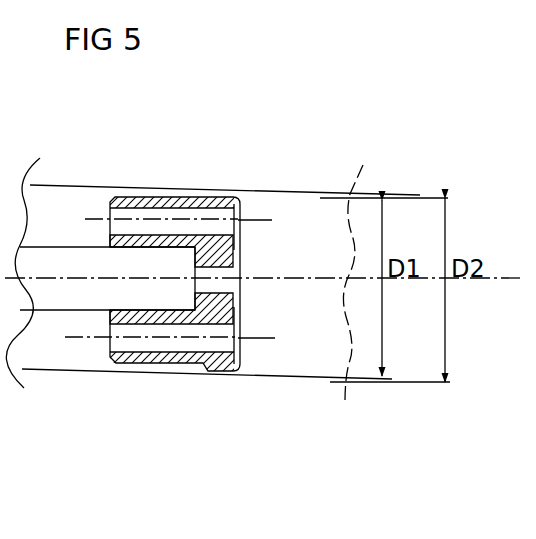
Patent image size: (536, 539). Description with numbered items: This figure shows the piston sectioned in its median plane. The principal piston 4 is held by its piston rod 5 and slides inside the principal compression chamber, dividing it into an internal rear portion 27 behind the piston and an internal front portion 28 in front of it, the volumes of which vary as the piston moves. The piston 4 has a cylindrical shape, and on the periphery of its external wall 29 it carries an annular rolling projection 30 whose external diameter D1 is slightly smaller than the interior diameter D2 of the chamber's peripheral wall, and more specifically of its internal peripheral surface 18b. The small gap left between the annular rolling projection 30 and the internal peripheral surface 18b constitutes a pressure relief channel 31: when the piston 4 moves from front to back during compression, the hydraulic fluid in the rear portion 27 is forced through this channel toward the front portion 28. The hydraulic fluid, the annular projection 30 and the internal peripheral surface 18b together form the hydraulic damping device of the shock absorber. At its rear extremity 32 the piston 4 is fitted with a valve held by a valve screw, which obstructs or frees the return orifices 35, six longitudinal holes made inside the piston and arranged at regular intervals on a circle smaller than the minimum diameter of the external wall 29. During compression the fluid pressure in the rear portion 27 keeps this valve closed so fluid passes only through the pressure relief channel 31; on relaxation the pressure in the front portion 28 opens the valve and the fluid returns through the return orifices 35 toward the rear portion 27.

The internal front portion 28 is at (56, 215).
The internal rear portion 27 is at (297, 247).
The internal peripheral surface 18b is at (300, 196).
The piston rod 5 is at (73, 297).
The annular rolling projection 30 is at (214, 190).
The return orifices 35 is at (161, 358).
The rear extremity 32 is at (243, 313).
The external wall 29 is at (163, 337).
The principal piston 4 is at (130, 371).
The pressure relief channel 31 is at (222, 371).